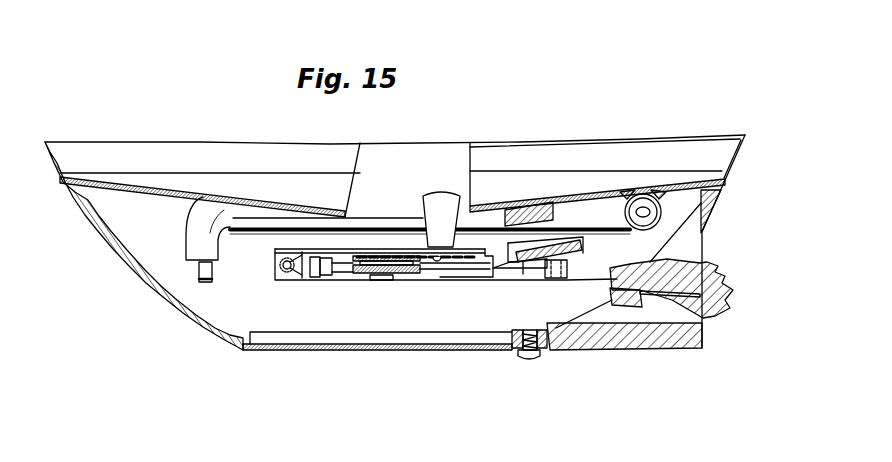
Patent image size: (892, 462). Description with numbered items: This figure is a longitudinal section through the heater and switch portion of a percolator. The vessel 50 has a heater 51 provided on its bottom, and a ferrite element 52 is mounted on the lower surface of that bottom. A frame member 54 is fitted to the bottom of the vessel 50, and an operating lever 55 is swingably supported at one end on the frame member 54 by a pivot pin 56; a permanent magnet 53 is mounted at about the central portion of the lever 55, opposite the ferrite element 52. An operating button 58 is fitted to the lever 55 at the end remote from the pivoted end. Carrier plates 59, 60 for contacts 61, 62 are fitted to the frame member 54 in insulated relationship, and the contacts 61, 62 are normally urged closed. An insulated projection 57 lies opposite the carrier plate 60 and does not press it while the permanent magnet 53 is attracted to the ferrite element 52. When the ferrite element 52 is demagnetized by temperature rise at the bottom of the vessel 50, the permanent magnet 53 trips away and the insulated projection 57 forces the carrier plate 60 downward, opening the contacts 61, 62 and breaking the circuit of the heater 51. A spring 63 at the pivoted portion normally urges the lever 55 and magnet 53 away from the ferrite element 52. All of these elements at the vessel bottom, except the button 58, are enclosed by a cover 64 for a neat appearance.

The vessel 50 is at (151, 186).
The heater 51 is at (193, 237).
The ferrite element 52 is at (552, 208).
The permanent magnet 53 is at (584, 247).
The frame member 54 is at (280, 251).
The operating lever 55 is at (447, 281).
The pivot pin 56 is at (282, 265).
The insulated projection 57 is at (557, 281).
The operating button 58 is at (710, 270).
The carrier plate 59 is at (490, 247).
The carrier plate 60 is at (421, 273).
The contact 61 is at (531, 270).
The contact 62 is at (516, 270).
The spring 63 is at (314, 279).
The cover 64 is at (117, 256).